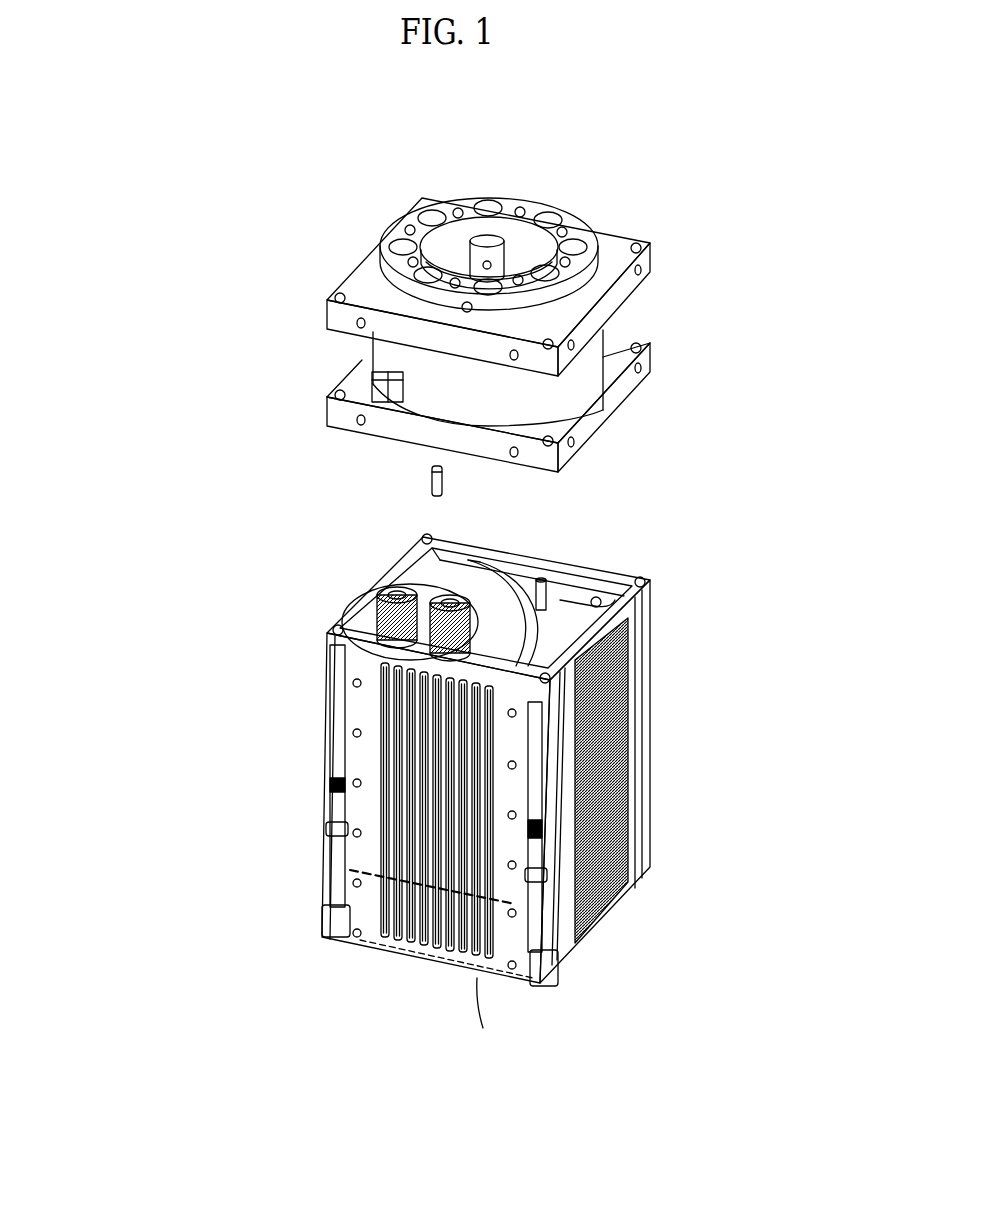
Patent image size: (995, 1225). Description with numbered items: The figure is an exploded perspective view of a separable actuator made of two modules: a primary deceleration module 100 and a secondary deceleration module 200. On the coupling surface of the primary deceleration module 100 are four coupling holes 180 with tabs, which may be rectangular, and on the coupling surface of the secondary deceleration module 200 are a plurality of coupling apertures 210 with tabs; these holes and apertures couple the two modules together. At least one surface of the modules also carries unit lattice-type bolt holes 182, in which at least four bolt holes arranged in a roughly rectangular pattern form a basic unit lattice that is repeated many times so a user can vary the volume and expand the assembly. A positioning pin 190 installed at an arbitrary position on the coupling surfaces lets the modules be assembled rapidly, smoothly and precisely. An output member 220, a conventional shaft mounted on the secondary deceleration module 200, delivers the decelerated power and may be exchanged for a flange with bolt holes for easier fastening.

The primary deceleration module 100 is at (622, 746).
The coupling holes 180 is at (427, 537).
The unit lattice-type bolt holes 182 is at (354, 736).
The positioning pin 190 is at (446, 485).
The secondary deceleration module 200 is at (632, 294).
The coupling apertures 210 is at (330, 396).
The output member 220 is at (540, 196).